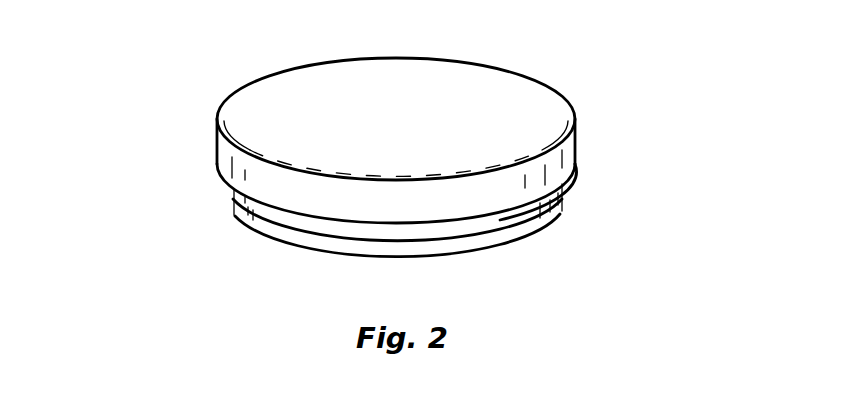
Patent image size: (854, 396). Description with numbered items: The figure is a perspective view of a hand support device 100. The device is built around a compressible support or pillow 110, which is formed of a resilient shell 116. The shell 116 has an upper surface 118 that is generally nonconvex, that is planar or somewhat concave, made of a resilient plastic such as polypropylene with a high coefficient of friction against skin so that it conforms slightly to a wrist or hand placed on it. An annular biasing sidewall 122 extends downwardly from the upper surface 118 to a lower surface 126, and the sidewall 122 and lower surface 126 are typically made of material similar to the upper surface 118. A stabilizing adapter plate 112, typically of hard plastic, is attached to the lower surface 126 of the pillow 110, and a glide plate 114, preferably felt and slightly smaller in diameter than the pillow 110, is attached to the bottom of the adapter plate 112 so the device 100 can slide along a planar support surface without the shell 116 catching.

The hand support device 100 is at (405, 129).
The compressible support or pillow 110 is at (222, 158).
The stabilizing adapter plate 112 is at (227, 197).
The glide plate 114 is at (230, 215).
The resilient shell 116 is at (300, 82).
The upper surface 118 is at (517, 88).
The annular biasing sidewall 122 is at (562, 158).
The lower surface 126 is at (568, 177).